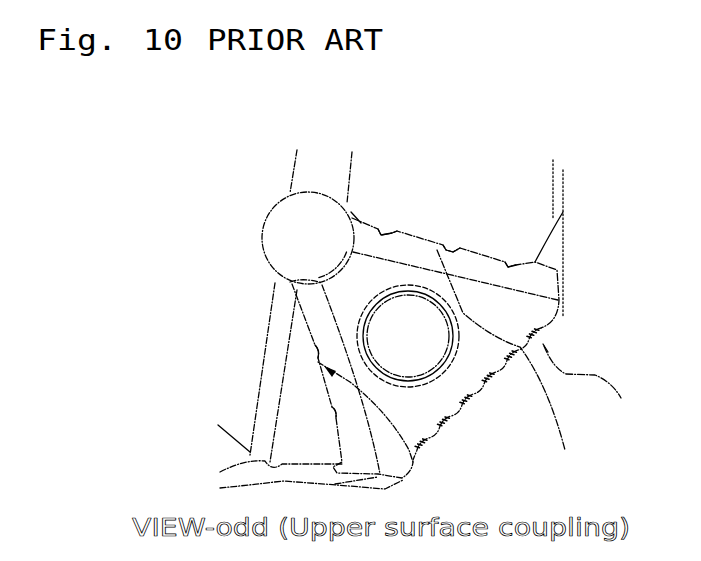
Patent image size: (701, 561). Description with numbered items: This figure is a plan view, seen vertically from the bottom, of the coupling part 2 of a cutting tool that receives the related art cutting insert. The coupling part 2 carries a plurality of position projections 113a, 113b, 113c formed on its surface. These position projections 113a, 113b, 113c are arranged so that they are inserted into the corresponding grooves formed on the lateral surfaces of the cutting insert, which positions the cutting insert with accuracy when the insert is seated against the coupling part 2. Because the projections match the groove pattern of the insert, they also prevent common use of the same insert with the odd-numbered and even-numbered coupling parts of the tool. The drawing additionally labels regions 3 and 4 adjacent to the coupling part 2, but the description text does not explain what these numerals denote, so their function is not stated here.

The position projection 113a is at (512, 263).
The position projection 113b is at (450, 248).
The position projection 113c is at (386, 232).
The coupling part 2 is at (587, 384).
The link member 3 is at (438, 413).
The base plate 4 is at (413, 462).